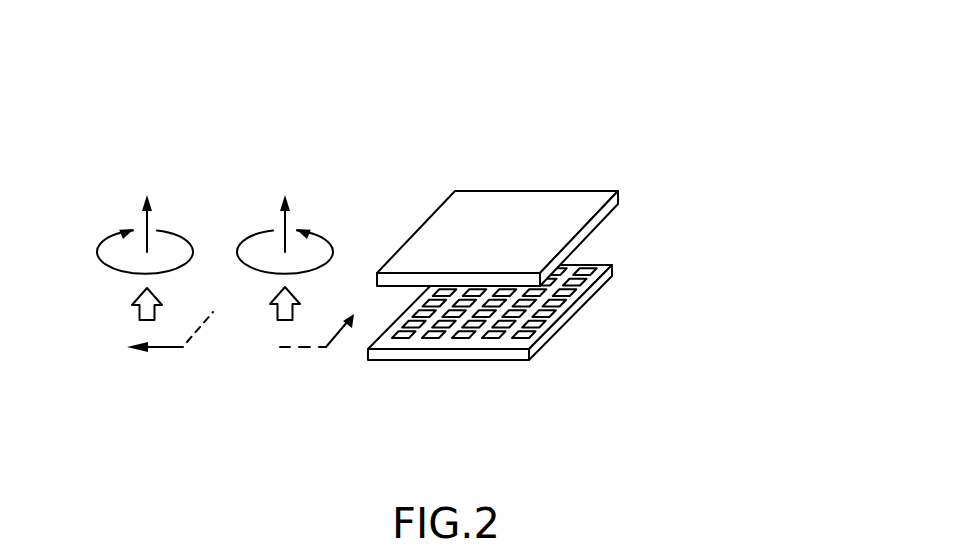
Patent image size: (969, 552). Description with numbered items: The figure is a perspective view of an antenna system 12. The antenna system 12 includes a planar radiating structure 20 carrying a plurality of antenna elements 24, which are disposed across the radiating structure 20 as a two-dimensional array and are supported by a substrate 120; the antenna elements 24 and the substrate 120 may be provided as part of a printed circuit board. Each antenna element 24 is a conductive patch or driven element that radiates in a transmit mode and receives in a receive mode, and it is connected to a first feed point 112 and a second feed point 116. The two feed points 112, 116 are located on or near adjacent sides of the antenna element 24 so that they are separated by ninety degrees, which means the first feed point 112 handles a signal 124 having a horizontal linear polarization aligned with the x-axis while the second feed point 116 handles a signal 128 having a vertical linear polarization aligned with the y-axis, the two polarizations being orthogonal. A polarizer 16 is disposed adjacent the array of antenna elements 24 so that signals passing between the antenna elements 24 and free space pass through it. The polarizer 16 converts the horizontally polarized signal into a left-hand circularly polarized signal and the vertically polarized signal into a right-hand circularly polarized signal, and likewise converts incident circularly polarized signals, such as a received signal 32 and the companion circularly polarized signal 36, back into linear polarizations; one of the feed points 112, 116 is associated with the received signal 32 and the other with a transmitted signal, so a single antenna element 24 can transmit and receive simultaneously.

The antenna system 12 is at (562, 86).
The polarizer 16 is at (590, 193).
The radiating structure 20 is at (367, 355).
The antenna element 24 is at (486, 336).
The received signal 32 is at (114, 207).
The right-hand circular polarization 36 is at (266, 214).
The first feed point 112 is at (443, 325).
The second feed point 116 is at (427, 338).
The substrate 120 is at (612, 266).
The signal having horizontal linear polarization 124 is at (133, 300).
The signal having vertical linear polarization 128 is at (272, 313).